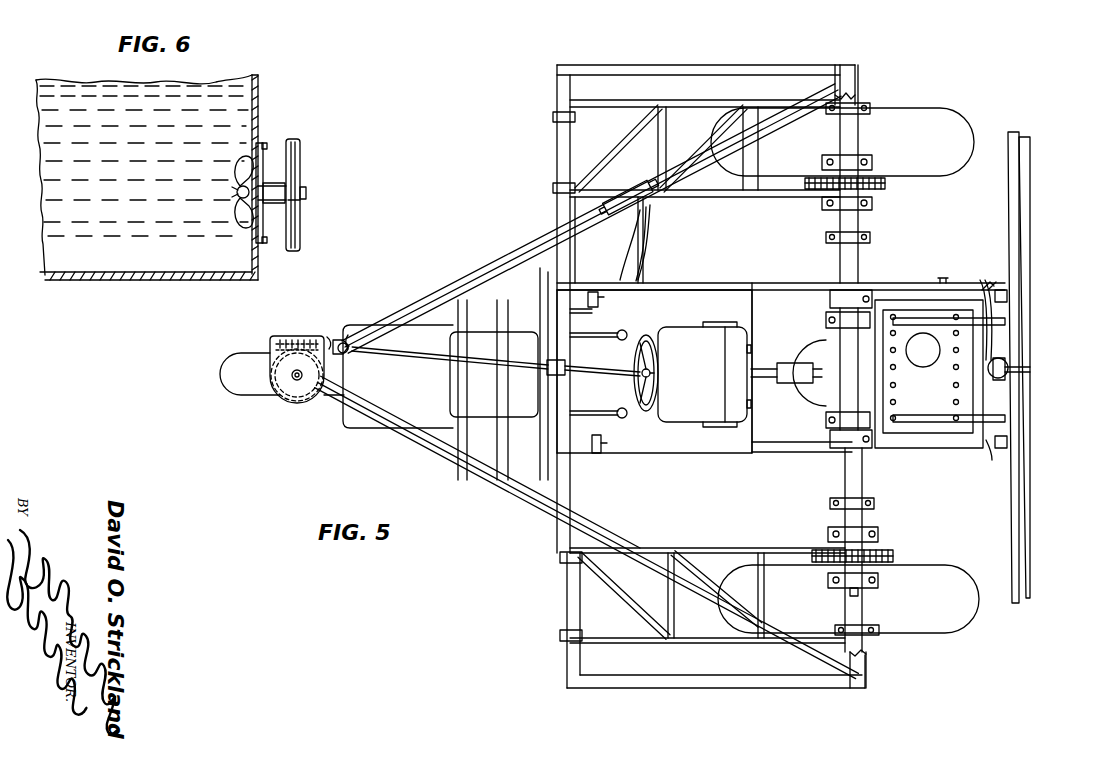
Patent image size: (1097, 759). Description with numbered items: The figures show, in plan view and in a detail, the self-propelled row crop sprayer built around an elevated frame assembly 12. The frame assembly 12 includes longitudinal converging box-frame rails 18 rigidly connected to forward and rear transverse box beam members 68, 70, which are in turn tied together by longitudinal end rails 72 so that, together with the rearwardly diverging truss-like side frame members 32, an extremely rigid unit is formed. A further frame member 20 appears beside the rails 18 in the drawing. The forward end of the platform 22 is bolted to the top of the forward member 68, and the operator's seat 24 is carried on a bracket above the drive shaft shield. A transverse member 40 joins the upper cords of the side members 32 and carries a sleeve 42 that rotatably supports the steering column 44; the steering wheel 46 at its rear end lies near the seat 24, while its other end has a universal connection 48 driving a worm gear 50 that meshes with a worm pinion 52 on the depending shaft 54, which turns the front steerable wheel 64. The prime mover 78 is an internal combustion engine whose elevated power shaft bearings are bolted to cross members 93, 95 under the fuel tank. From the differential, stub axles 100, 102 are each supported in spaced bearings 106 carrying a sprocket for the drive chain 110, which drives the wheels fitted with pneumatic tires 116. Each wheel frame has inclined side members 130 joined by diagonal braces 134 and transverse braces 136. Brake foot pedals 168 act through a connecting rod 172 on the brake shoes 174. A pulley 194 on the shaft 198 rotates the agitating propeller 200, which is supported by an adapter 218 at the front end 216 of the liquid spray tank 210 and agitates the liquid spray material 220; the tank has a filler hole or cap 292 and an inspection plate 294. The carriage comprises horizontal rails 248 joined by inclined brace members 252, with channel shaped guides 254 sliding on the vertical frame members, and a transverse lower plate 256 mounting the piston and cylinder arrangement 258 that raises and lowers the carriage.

In FIG. 5, the elevated frame assembly 12 is at (556, 536).
In FIG. 5, the longitudinal converging box-frame rails 18 is at (795, 453).
In FIG. 5, the upper deck rail 20 is at (822, 300).
In FIG. 5, the platform 22 is at (733, 452).
In FIG. 5, the operator's seat 24 is at (675, 328).
In FIG. 5, the rearwardly diverging frame members 32 is at (468, 280).
In FIG. 5, the transverse member 40 is at (540, 300).
In FIG. 5, the sleeve 42 is at (565, 372).
In FIG. 5, the steering column 44 is at (505, 363).
In FIG. 5, the steering wheel 46 is at (645, 412).
In FIG. 5, the universal connection 48 is at (346, 336).
In FIG. 5, the worm gear 50 is at (296, 340).
In FIG. 5, the worm pinion 52 is at (300, 402).
In FIG. 5, the depending shaft 54 is at (294, 380).
In FIG. 5, the front steerable wheel 64 is at (225, 378).
In FIG. 5, the forward transverse box beam member 68 is at (572, 504).
In FIG. 5, the rear transverse box beam member 70 is at (866, 650).
In FIG. 5, the longitudinal end rails 72 is at (755, 684).
In FIG. 5, the prime mover 78 is at (395, 403).
In FIG. 5, the cross member 93 is at (507, 420).
In FIG. 5, the cross member 95 is at (455, 448).
In FIG. 5, the stub axle 100 is at (860, 516).
In FIG. 5, the stub axle 102 is at (860, 258).
In FIG. 5, the spaced bearings 106 is at (864, 582).
In FIG. 5, the drive chain 110 is at (884, 186).
In FIG. 5, the pneumatic tire 116 is at (930, 106).
In FIG. 5, the inclined side members 130 is at (728, 548).
In FIG. 5, the diagonal braces 134 is at (600, 580).
In FIG. 5, the transverse braces 136 is at (676, 620).
In FIG. 5, the foot pedals 168 is at (592, 292).
In FIG. 5, the connecting rod 172 is at (818, 456).
In FIG. 5, the brake shoes 174 is at (855, 294).
In FIG. 6, the pulley 194 is at (300, 230).
In FIG. 6, the shaft 198 is at (283, 203).
In FIG. 6, the agitating propeller 200 is at (238, 183).
In FIG. 6, the liquid spray tank 210 is at (212, 276).
In FIG. 6, the front end of the tank 216 is at (258, 105).
In FIG. 6, the adapter 218 is at (272, 180).
In FIG. 6, the liquid spray material 220 is at (208, 92).
In FIG. 5, the horizontal rails 248 is at (1012, 545).
In FIG. 5, the inclined brace members 252 is at (1031, 530).
In FIG. 5, the channel shaped guides 254 is at (993, 270).
In FIG. 5, the transverse lower plate 256 is at (1005, 400).
In FIG. 5, the piston and cylinder arrangement 258 is at (1005, 357).
In FIG. 5, the filler hole or cap 292 is at (924, 362).
In FIG. 5, the inspection plate 294 is at (937, 415).